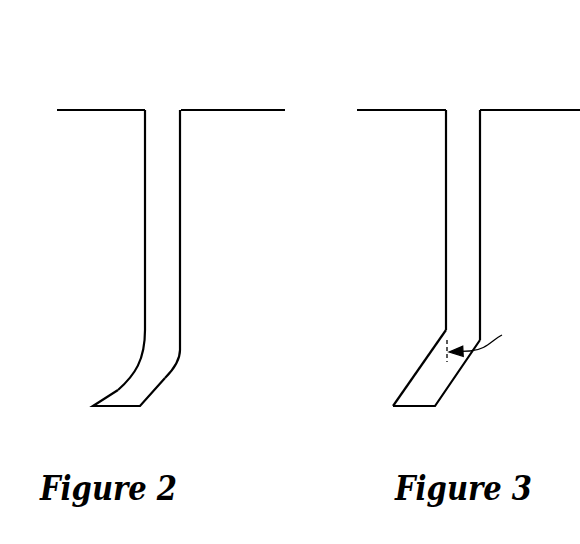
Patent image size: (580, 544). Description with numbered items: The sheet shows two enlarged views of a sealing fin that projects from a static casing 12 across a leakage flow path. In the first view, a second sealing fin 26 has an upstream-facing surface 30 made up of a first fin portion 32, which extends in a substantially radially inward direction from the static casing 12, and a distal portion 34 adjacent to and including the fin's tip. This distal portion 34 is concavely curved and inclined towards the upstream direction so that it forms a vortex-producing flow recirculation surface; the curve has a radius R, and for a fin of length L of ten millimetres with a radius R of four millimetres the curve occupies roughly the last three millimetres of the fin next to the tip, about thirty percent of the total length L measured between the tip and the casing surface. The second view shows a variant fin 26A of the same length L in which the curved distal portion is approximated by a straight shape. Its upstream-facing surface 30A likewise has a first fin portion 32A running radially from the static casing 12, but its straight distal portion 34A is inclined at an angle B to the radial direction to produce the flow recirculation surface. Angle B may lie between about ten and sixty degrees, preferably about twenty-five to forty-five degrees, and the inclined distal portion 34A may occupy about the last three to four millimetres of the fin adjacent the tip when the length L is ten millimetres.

In FIG. 2, the static casing 12 is at (102, 76).
In FIG. 3, the static casing 12 is at (539, 81).
In FIG. 2, the second sealing fin 26 is at (162, 99).
In FIG. 2, the upstream-facing surface 30 is at (135, 318).
In FIG. 2, the first fin portion 32 is at (181, 198).
In FIG. 2, the distal portion 34 is at (117, 392).
In FIG. 2, the radius R is at (121, 352).
In FIG. 3, the fin 26A is at (459, 98).
In FIG. 3, the upstream-facing surface 30A is at (435, 317).
In FIG. 3, the first fin portion 32A is at (446, 174).
In FIG. 3, the straight distal portion 34A is at (404, 390).
In FIG. 3, the angle B is at (416, 346).
In FIG. 3, the length L is at (320, 124).